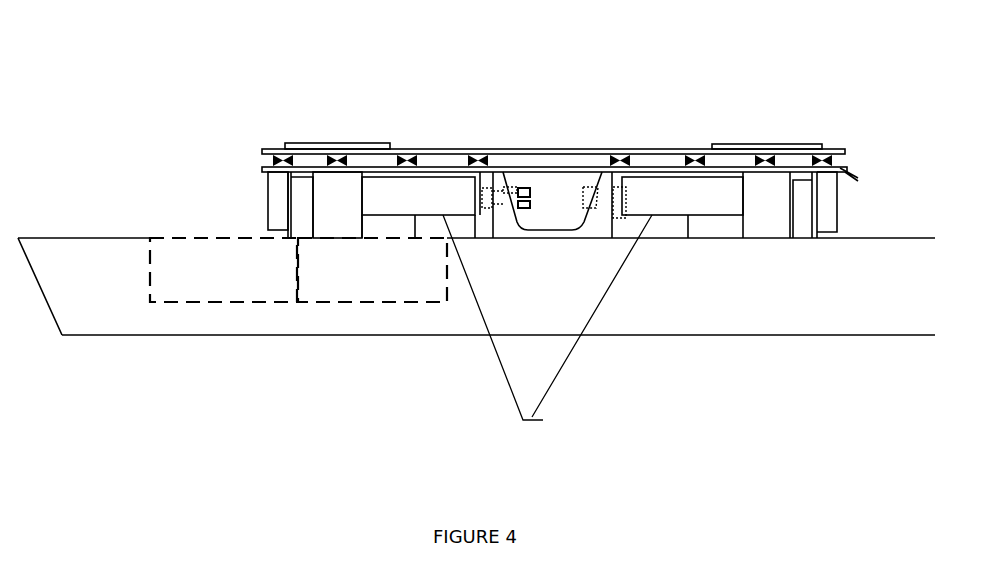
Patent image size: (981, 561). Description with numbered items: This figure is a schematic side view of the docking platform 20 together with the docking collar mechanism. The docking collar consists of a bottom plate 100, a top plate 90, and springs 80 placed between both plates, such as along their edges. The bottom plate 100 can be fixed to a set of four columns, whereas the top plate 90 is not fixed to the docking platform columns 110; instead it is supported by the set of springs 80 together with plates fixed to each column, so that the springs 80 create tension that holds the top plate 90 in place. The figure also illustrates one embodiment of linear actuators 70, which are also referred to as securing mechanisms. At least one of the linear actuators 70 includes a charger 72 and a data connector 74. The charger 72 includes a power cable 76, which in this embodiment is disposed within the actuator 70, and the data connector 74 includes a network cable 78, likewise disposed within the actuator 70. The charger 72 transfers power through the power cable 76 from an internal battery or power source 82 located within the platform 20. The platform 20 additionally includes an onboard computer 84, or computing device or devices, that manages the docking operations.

The docking platform 20 is at (64, 338).
The linear actuator 70 is at (547, 320).
The charger 72 is at (522, 189).
The data connector 74 is at (528, 203).
The power cable 76 is at (510, 188).
The network cable 78 is at (482, 190).
The spring 80 is at (830, 160).
The internal battery or power source 82 is at (150, 262).
The onboard computer 84 is at (400, 303).
The top plate 90 is at (638, 148).
The bottom plate 100 is at (262, 165).
The docking platform column 110 is at (347, 145).